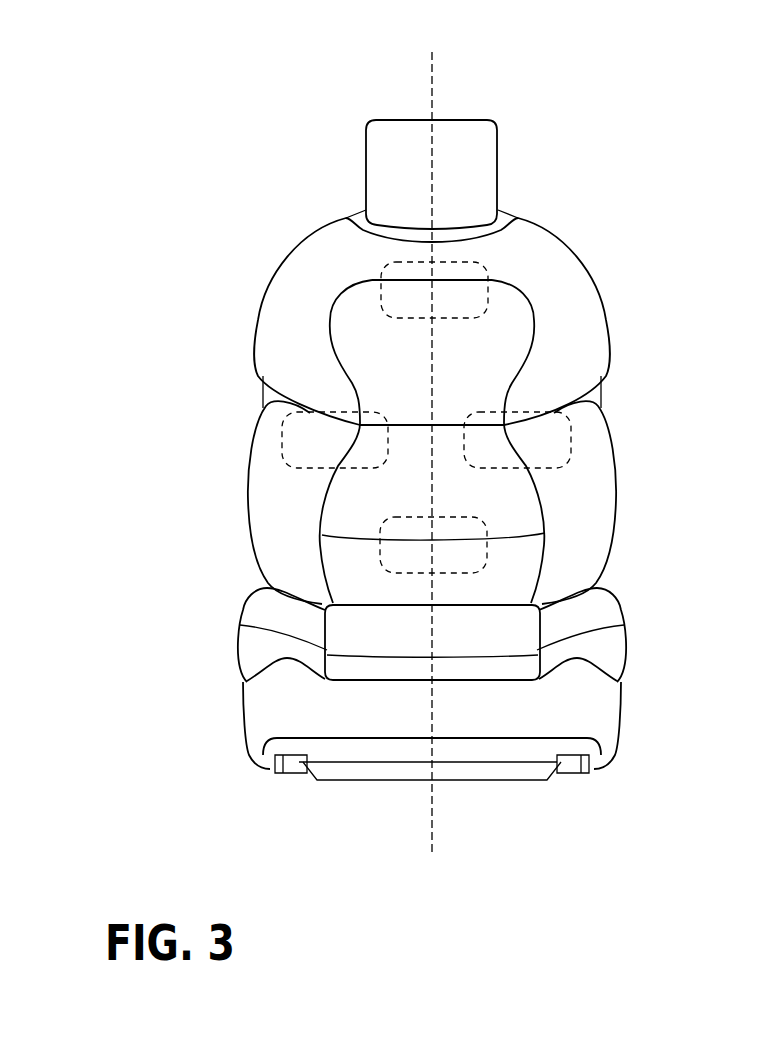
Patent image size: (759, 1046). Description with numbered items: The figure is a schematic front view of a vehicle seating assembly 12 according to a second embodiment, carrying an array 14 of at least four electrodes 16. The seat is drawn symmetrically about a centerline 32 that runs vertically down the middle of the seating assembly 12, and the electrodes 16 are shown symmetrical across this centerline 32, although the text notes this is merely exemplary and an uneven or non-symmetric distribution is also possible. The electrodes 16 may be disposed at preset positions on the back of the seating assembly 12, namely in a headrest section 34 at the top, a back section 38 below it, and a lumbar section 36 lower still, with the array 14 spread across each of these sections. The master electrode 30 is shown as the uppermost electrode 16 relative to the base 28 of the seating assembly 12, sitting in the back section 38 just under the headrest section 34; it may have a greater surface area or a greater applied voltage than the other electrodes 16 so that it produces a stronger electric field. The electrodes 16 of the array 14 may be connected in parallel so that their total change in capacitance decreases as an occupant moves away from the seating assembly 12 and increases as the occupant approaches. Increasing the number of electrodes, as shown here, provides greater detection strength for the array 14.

The seating assembly 12 is at (607, 392).
The array 14 is at (493, 553).
The electrodes 16 is at (555, 447).
The base 28 is at (377, 632).
The master electrode 30 is at (465, 300).
The centerline 32 is at (432, 92).
The headrest section 34 is at (483, 174).
The lumbar section 36 is at (282, 508).
The back section 38 is at (300, 305).